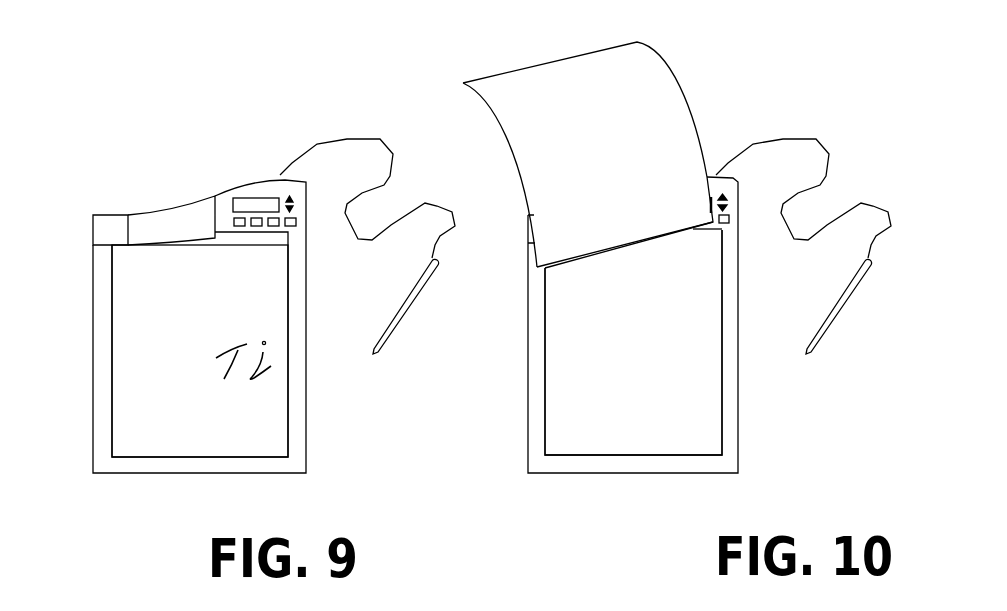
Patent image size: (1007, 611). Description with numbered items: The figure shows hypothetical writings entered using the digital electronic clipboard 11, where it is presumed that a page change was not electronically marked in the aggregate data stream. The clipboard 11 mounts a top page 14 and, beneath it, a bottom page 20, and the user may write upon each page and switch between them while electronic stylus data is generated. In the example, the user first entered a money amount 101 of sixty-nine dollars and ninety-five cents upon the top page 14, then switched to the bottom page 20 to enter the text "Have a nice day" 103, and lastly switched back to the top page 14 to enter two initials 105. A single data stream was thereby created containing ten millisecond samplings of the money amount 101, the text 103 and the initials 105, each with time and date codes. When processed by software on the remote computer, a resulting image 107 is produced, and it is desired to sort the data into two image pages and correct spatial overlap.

In FIG. 9, the digital electronic clipboard 11 is at (216, 193).
In FIG. 10, the digital electronic clipboard 11 is at (739, 451).
In FIG. 9, the top page 14 is at (277, 417).
In FIG. 10, the top page 14 is at (682, 82).
In FIG. 10, the bottom page 20 is at (650, 435).
In FIG. 9, the money amount 101 is at (133, 328).
In FIG. 10, the text "Have a nice day" 103 is at (553, 323).
In FIG. 9, the two initials 105 is at (222, 376).
In FIG. 10, the resulting image 107 is at (545, 603).